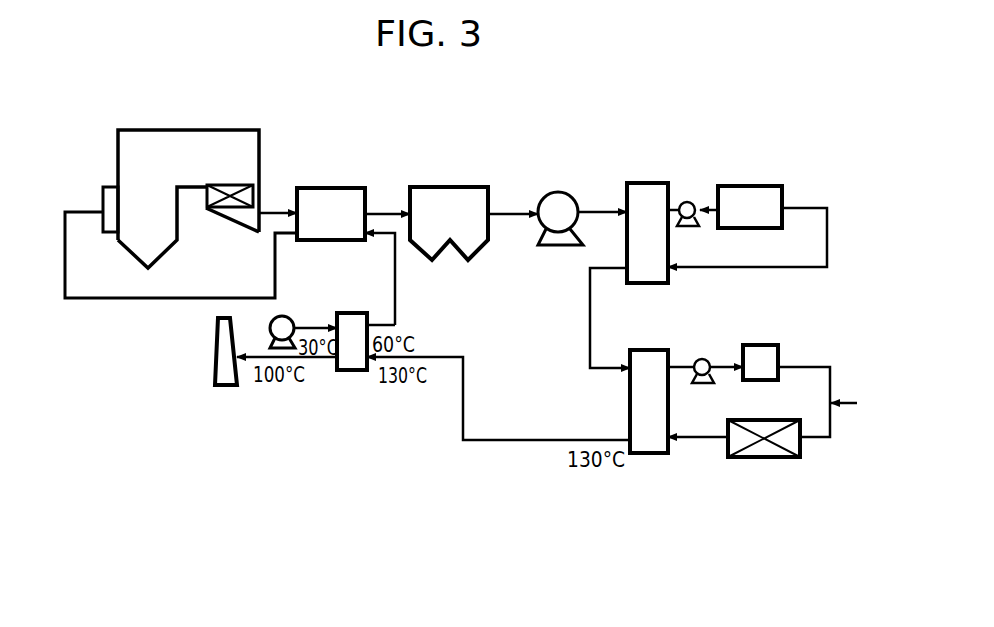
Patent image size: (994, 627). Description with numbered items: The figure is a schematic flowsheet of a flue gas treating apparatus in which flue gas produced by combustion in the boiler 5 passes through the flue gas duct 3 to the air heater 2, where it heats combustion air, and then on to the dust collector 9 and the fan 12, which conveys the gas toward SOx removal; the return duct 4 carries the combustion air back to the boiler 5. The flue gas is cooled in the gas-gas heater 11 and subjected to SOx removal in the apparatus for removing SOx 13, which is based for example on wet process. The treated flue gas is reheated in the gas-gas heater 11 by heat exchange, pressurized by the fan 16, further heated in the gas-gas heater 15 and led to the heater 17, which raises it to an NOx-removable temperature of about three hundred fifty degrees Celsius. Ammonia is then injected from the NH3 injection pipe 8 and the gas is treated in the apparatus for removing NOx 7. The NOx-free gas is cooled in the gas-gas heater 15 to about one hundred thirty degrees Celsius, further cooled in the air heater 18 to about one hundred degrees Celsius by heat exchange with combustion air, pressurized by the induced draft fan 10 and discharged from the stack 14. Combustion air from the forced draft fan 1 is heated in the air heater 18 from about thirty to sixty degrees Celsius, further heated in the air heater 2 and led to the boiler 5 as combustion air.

The forced draft fan 1 is at (285, 316).
The air heater 2 is at (328, 188).
The flue gas duct 3 is at (275, 212).
The recirculation line 4 is at (88, 300).
The boiler 5 is at (127, 150).
The apparatus for removing NOx 7 is at (765, 457).
The NH3 injection pipe 8 is at (842, 403).
The dust collector 9 is at (440, 187).
The induced draft fan 10 is at (555, 192).
The gas-gas heater 11 is at (650, 183).
The fan 12 is at (688, 202).
The apparatus for removing SOx 13 is at (740, 186).
The stack 14 is at (215, 378).
The gas-gas heater 15 is at (650, 457).
The fan 16 is at (702, 359).
The heater 17 is at (760, 345).
The air heater 18 is at (352, 372).